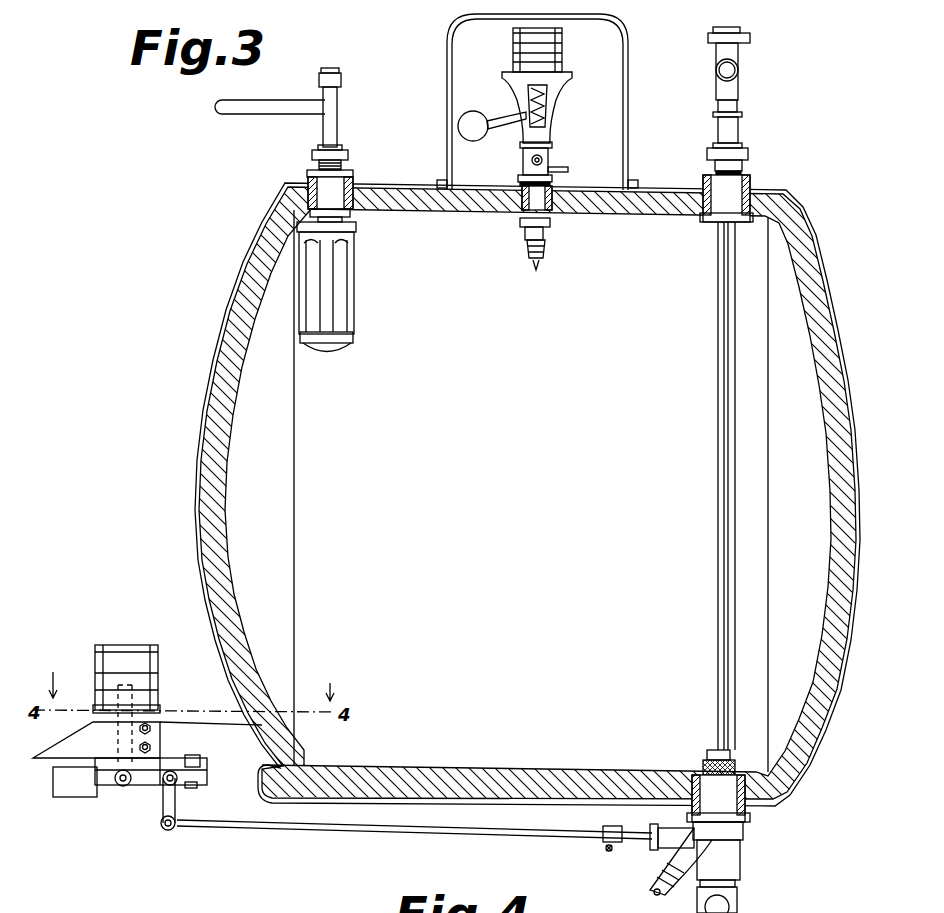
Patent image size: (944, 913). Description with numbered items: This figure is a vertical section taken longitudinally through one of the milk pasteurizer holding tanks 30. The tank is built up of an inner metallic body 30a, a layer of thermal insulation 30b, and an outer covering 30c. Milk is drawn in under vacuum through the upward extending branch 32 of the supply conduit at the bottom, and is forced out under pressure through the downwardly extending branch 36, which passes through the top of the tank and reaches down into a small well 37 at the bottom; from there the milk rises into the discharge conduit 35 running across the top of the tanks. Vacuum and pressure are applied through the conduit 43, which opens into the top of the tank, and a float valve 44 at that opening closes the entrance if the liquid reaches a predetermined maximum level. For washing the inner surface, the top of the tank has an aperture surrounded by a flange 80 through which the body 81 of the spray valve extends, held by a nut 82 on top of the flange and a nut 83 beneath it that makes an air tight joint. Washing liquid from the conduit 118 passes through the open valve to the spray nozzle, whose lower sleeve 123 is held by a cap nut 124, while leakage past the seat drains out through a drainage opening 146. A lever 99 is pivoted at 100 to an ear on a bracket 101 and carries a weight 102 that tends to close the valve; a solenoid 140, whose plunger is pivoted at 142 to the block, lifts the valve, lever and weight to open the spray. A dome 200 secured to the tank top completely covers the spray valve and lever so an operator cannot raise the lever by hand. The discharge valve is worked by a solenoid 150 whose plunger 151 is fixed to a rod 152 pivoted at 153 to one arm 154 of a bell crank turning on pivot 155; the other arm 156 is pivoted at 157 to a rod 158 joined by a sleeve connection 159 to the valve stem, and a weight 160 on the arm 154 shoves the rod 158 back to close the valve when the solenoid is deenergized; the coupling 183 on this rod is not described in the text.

The holding tank 30 is at (500, 494).
The inner metallic body 30a is at (230, 472).
The layer of thermal insulation 30b is at (210, 410).
The outer covering 30c is at (210, 352).
The upward extending branch 32 is at (737, 866).
The discharge conduit 35 is at (737, 62).
The downwardly extending branch 36 is at (737, 130).
The well 37 is at (737, 904).
The conduit 43 is at (255, 100).
The float valve 44 is at (347, 314).
The flange 80 is at (553, 200).
The body 81 is at (530, 205).
The nut 82 is at (554, 178).
The nut 83 is at (545, 230).
The lever 99 is at (503, 127).
The pivot 100 is at (556, 101).
The bracket 101 is at (556, 116).
The weight 102 is at (477, 101).
The conduit 118 is at (519, 161).
The sleeve 123 is at (528, 250).
The cap nut 124 is at (540, 264).
The solenoid 140 is at (552, 52).
The pivot 142 is at (549, 90).
The drainage opening 146 is at (552, 166).
The solenoid 150 is at (142, 665).
The plunger 151 is at (145, 702).
The rod 152 is at (117, 730).
The pivot 153 is at (122, 787).
The arm 154 is at (147, 790).
The pivot 155 is at (174, 780).
The arm 156 is at (176, 804).
The pivot 157 is at (173, 828).
The rod 158 is at (401, 828).
The sleeve connection 159 is at (605, 828).
The weight 160 is at (62, 790).
The coupling 183 is at (650, 833).
The dome 200 is at (625, 93).